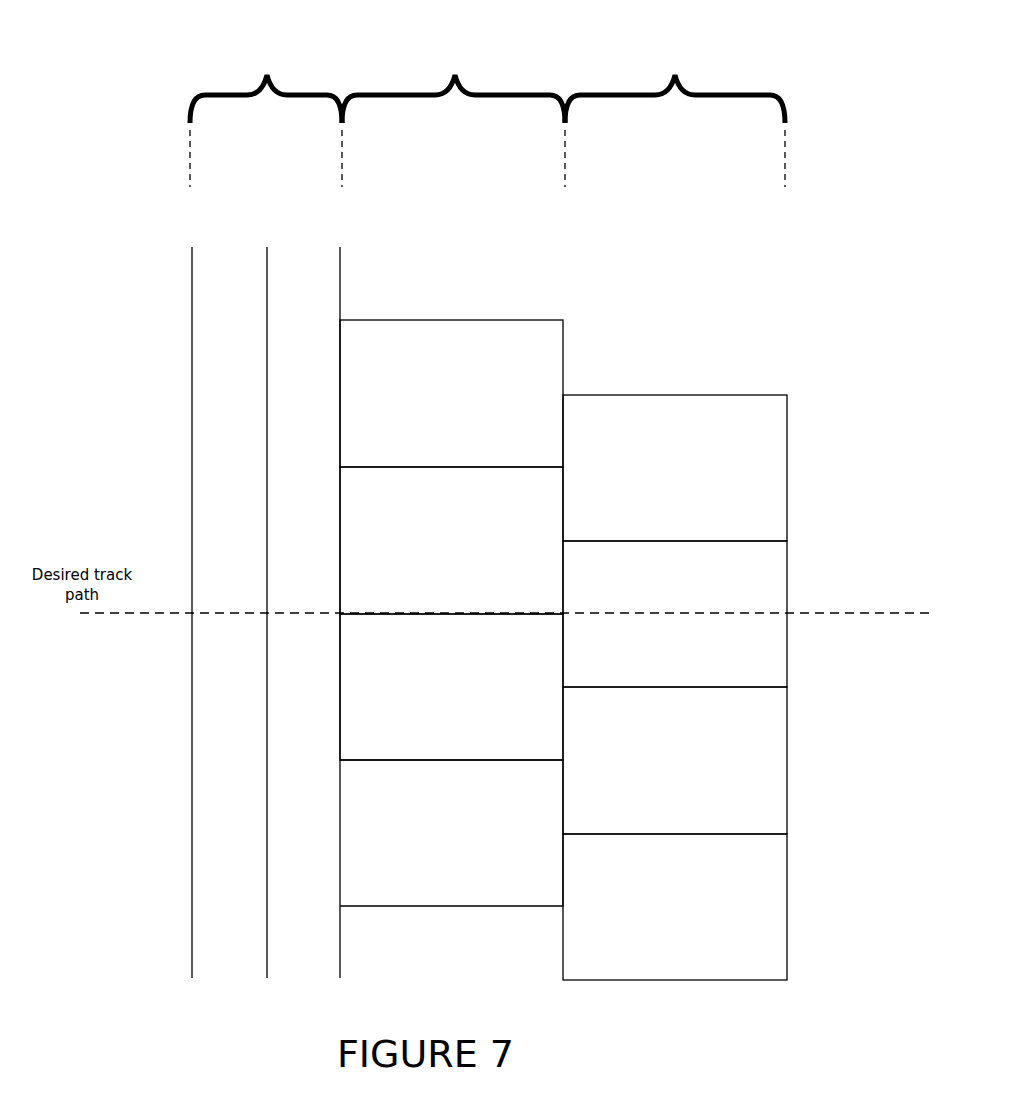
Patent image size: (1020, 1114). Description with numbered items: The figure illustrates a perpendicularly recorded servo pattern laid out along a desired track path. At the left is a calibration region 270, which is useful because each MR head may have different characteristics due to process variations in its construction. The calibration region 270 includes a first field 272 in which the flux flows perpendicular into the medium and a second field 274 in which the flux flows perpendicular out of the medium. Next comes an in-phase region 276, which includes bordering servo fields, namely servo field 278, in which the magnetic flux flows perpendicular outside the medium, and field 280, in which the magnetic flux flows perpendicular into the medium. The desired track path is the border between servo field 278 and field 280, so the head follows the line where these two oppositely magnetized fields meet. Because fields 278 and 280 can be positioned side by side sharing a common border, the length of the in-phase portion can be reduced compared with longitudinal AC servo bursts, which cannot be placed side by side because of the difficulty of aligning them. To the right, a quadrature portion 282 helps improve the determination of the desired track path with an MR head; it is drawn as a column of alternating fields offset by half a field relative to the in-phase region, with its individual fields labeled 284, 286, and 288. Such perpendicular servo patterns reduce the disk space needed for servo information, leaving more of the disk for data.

The calibration region 270 is at (266, 98).
The first field 272 is at (200, 283).
The second field 274 is at (325, 296).
The in-phase region 276 is at (453, 98).
The servo field 278 is at (451, 540).
The field 280 is at (451, 687).
The quadrature portion 282 is at (675, 98).
The quadrature servo element 284 is at (778, 590).
The quadrature servo element 286 is at (787, 495).
The quadrature servo element 288 is at (778, 742).